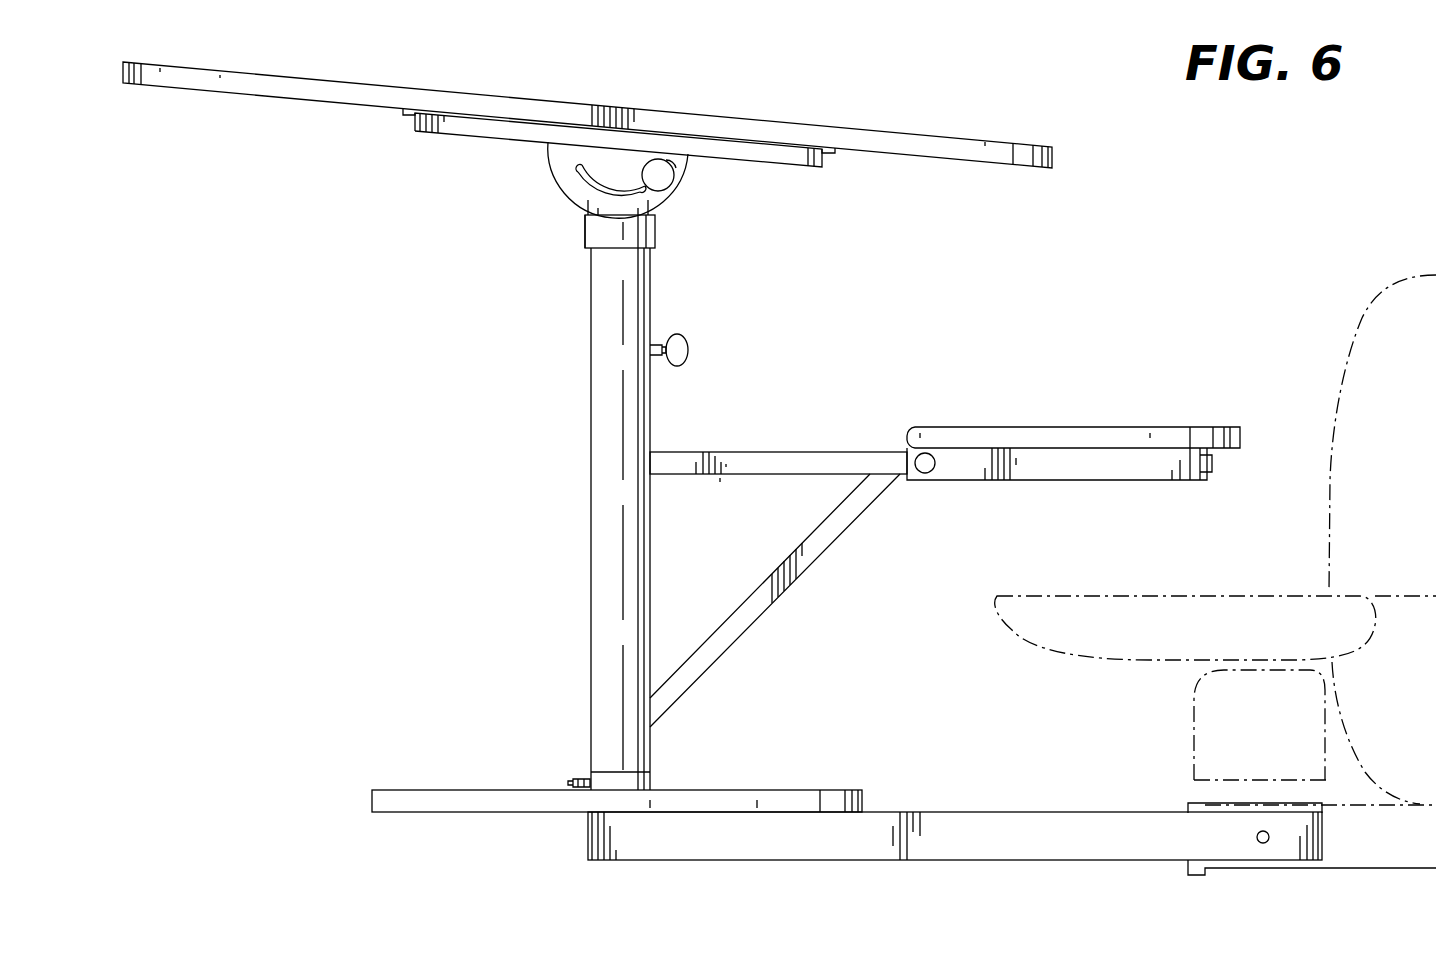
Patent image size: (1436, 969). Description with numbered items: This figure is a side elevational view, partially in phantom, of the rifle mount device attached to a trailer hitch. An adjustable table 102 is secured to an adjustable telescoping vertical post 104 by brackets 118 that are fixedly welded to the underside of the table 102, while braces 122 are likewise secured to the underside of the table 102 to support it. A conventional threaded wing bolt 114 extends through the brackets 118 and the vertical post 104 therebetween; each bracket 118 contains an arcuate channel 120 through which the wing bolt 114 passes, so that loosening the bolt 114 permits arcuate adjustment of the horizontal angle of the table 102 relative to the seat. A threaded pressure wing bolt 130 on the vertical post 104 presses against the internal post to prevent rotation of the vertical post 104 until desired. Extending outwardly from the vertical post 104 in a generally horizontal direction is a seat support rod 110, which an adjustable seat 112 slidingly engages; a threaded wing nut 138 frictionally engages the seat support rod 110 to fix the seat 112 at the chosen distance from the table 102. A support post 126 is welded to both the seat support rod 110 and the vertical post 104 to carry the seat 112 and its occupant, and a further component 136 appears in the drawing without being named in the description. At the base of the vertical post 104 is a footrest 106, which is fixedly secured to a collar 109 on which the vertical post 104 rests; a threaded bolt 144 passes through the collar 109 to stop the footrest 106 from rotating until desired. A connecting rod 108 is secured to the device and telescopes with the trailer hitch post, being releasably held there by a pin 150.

The adjustable table 102 is at (860, 130).
The adjustable telescoping vertical post 104 is at (643, 296).
The footrest 106 is at (456, 800).
The connecting rod 108 is at (1037, 822).
The collar 109 is at (645, 782).
The seat support rod 110 is at (826, 426).
The adjustable seat 112 is at (1130, 436).
The threaded wing bolt 114 is at (676, 182).
The brackets 118 is at (557, 173).
The arcuate channel 120 is at (660, 236).
The braces 122 is at (403, 130).
The support post 126 is at (585, 228).
The threaded pressure wing bolt 130 is at (690, 350).
The diagonal brace 136 is at (800, 576).
The threaded wing nut 138 is at (930, 474).
The threaded bolt 144 is at (577, 778).
The pin 150 is at (1257, 834).